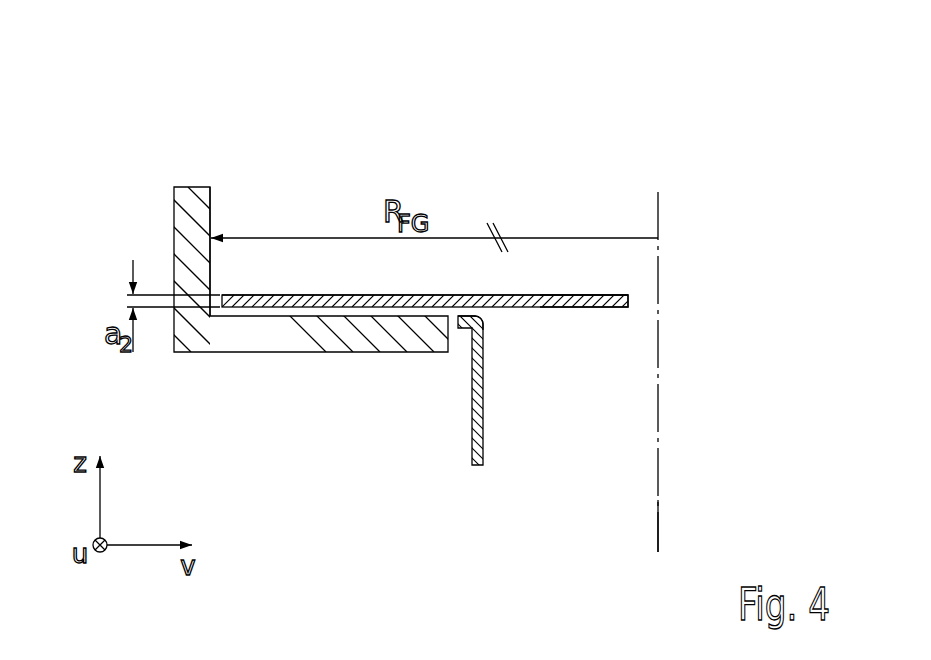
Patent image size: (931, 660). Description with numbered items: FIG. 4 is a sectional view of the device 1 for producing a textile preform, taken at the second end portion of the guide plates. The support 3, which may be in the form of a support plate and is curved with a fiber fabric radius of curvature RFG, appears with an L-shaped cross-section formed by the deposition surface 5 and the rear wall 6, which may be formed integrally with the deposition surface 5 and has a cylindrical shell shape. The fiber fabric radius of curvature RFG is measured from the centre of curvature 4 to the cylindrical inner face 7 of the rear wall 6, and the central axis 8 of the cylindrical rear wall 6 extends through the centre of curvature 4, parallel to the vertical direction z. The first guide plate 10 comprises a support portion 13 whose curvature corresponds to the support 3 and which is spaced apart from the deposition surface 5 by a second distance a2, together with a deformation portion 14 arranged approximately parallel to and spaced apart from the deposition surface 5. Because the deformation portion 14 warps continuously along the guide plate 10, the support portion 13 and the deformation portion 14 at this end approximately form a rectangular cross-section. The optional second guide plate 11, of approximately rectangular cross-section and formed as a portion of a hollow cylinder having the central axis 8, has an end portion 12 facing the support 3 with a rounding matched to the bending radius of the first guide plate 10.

The device 1 is at (250, 88).
The support 3 is at (284, 313).
The centre of curvature 4 is at (679, 357).
The deposition surface 5 is at (365, 340).
The rear wall 6 is at (187, 217).
The inner face 7 is at (210, 200).
The central axis 8 is at (660, 527).
The first guide plate 10 is at (428, 247).
The second guide plate 11 is at (475, 438).
The end portion 12 is at (476, 316).
The support portion 13 is at (308, 295).
The deformation portion 14 is at (550, 295).